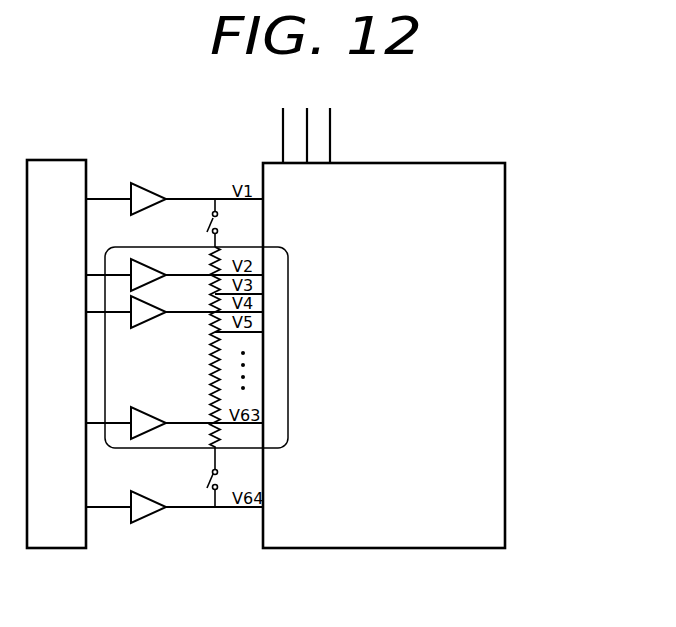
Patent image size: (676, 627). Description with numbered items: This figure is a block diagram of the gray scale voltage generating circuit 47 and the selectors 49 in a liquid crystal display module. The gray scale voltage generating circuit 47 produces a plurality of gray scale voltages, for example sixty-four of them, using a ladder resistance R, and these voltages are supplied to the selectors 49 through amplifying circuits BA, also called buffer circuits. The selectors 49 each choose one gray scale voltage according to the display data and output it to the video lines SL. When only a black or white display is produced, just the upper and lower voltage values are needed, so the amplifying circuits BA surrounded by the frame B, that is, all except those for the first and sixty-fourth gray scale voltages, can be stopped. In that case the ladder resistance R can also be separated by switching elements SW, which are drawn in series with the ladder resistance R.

The gray scale voltage generating circuit 47 is at (62, 549).
The selectors 49 is at (506, 363).
The amplifying circuits BA is at (148, 187).
The ladder resistance R is at (205, 367).
The switching elements SW is at (228, 475).
The video lines SL is at (331, 128).
The frame B is at (289, 447).